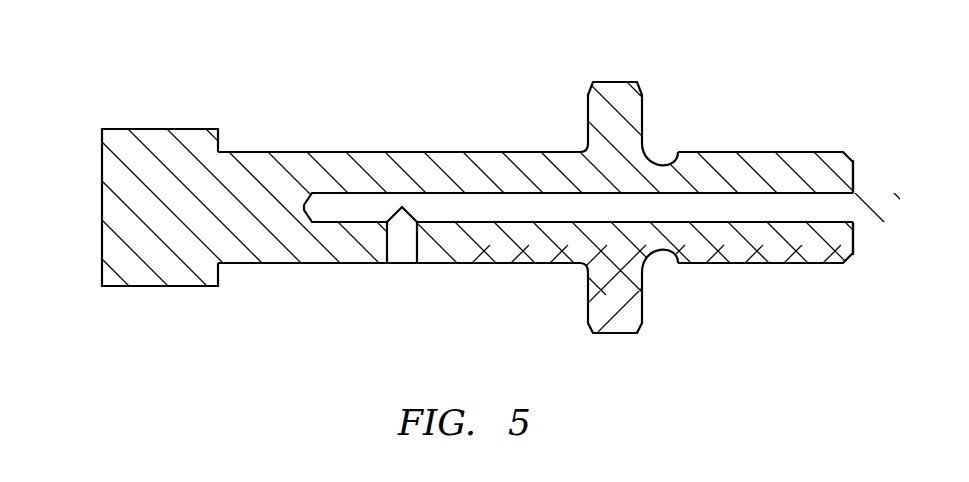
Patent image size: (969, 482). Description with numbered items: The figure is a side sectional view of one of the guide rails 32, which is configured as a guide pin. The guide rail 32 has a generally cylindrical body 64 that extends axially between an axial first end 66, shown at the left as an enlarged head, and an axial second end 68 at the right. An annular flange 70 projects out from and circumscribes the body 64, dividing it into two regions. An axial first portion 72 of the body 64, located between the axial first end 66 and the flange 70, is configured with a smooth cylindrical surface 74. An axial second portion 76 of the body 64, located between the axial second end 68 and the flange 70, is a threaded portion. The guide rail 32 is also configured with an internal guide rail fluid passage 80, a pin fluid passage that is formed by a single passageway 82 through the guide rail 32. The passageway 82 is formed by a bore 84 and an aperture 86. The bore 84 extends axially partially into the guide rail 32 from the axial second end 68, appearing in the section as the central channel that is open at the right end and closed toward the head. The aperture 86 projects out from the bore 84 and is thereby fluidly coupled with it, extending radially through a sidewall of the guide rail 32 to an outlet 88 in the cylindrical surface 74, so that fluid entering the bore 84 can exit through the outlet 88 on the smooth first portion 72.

The guide rail 32 is at (484, 190).
The body 64 is at (289, 149).
The axial first end 66 is at (100, 210).
The axial second end 68 is at (853, 235).
The annular flange 70 is at (642, 104).
The axial first portion 72 is at (300, 272).
The smooth cylindrical surface 74 is at (473, 263).
The axial second portion 76 is at (754, 270).
The guide rail fluid passage 80 is at (578, 153).
The passageway 82 is at (455, 213).
The bore 84 is at (745, 190).
The aperture 86 is at (396, 247).
The outlet 88 is at (409, 263).